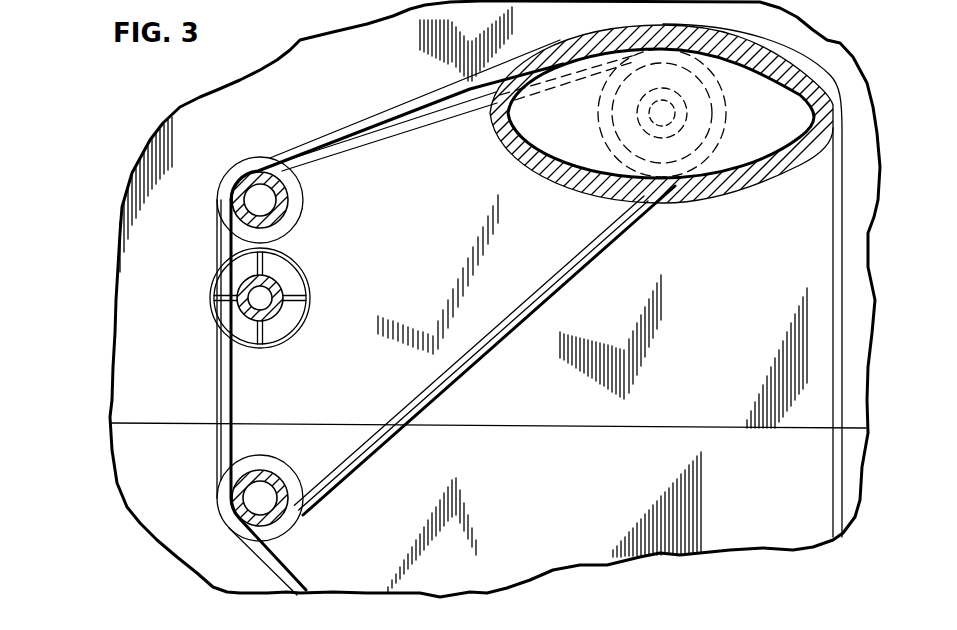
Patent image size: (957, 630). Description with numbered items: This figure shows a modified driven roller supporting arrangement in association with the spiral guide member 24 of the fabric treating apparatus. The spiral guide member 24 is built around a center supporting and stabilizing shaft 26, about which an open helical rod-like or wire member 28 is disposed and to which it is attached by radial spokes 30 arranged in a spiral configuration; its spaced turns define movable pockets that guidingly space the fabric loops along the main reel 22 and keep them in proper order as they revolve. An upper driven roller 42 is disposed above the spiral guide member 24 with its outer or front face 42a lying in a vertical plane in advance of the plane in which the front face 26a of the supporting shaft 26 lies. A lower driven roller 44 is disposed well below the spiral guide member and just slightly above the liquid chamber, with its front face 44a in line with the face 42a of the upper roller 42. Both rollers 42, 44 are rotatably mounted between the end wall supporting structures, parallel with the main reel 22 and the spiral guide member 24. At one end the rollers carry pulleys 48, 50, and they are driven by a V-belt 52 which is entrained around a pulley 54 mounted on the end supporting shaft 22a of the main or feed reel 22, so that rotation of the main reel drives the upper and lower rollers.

The main reel 22 is at (710, 200).
The end supporting shaft 22a is at (674, 110).
The pulley 54 is at (610, 148).
The pulley 48 is at (249, 163).
The upper driven roller 42 is at (289, 211).
The front face 42a is at (233, 195).
The spiral guide member 24 is at (318, 298).
The helical rod-like or wire member 28 is at (296, 268).
The radial spokes 30 is at (264, 340).
The center supporting and stabilizing shaft 26 is at (278, 313).
The front face 26a is at (238, 304).
The lower driven roller 44 is at (279, 478).
The front face 44a is at (234, 497).
The pulley 50 is at (276, 533).
The V-belt 52 is at (470, 367).